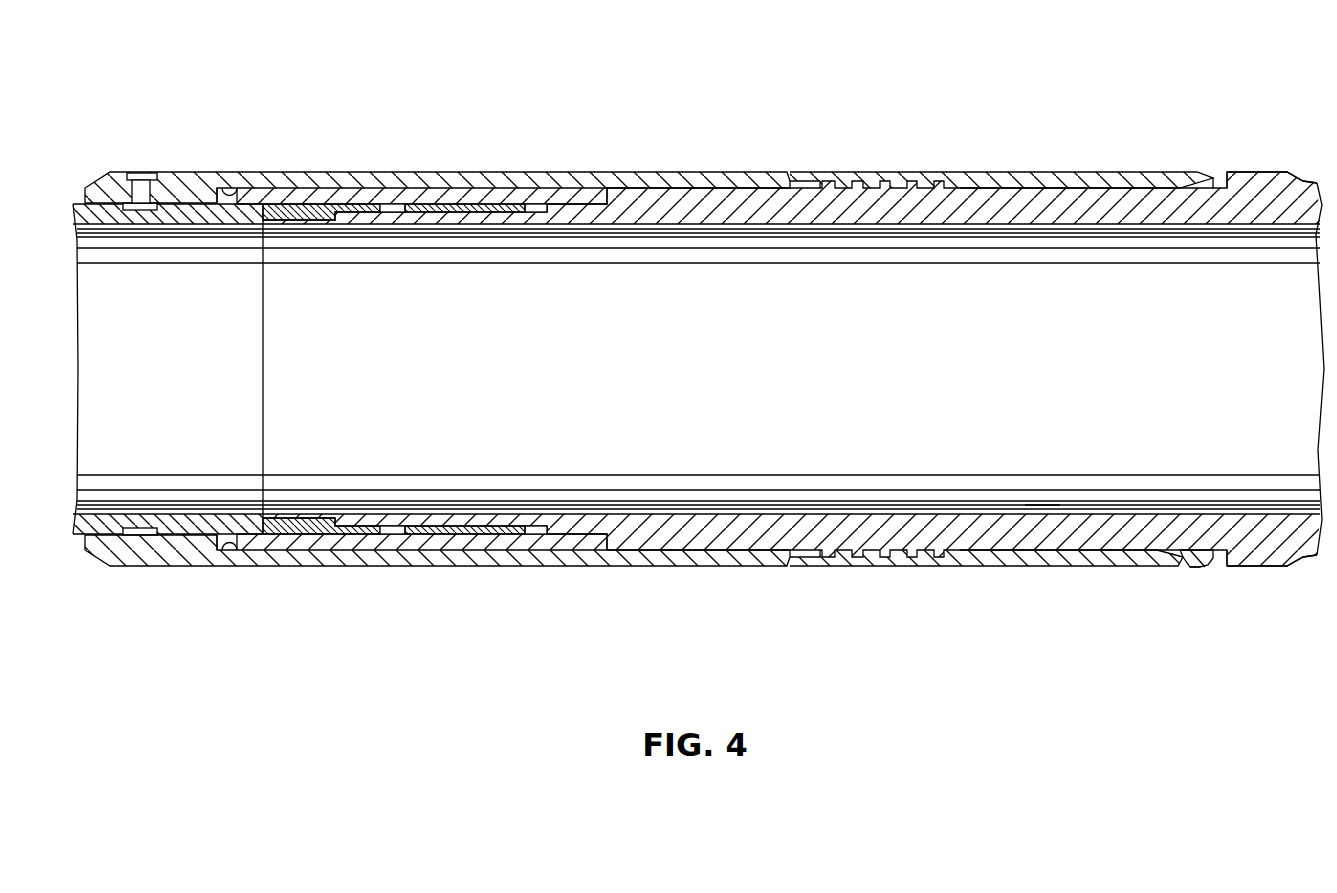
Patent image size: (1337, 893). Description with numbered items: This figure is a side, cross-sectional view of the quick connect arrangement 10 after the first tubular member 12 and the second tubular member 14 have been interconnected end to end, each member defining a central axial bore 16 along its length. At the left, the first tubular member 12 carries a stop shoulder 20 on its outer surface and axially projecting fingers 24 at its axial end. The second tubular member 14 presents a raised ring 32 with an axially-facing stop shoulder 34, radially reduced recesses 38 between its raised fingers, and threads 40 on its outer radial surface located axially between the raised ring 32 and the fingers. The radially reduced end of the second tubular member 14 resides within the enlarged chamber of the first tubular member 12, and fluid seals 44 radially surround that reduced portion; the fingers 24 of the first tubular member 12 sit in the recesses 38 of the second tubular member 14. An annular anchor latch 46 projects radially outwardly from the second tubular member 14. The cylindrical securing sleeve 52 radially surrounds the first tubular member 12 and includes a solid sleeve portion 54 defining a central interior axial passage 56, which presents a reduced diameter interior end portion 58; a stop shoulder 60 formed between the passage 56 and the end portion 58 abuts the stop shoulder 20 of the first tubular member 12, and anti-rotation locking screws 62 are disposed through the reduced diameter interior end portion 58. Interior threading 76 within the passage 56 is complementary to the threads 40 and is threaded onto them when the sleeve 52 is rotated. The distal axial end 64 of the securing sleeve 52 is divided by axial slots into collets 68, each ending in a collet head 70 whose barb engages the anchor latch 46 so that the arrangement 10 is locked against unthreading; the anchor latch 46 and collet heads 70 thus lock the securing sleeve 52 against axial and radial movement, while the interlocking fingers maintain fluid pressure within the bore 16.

The quick connect arrangement 10 is at (1000, 62).
The first tubular member 12 is at (303, 567).
The second tubular member 14 is at (1265, 572).
The central axial bore 16 is at (1040, 512).
The stop shoulder 20 is at (205, 548).
The axially projecting fingers 24 is at (430, 204).
The raised ring 32 is at (1250, 170).
The axially-facing stop shoulder 34 is at (1220, 548).
The radially reduced recesses 38 is at (597, 194).
The threads 40 is at (852, 182).
The fluid seals 44 is at (447, 535).
The annular anchor latch 46 is at (1176, 562).
The cylindrical securing sleeve 52 is at (675, 168).
The solid sleeve portion 54 is at (500, 188).
The central interior axial passage 56 is at (713, 196).
The reduced diameter interior end portion 58 is at (188, 212).
The stop shoulder 60 is at (238, 190).
The anti-rotation locking screws 62 is at (140, 172).
The distal axial end 64 is at (1220, 178).
The collets 68 is at (1090, 170).
The collet head 70 is at (1200, 568).
The interior threading 76 is at (905, 552).